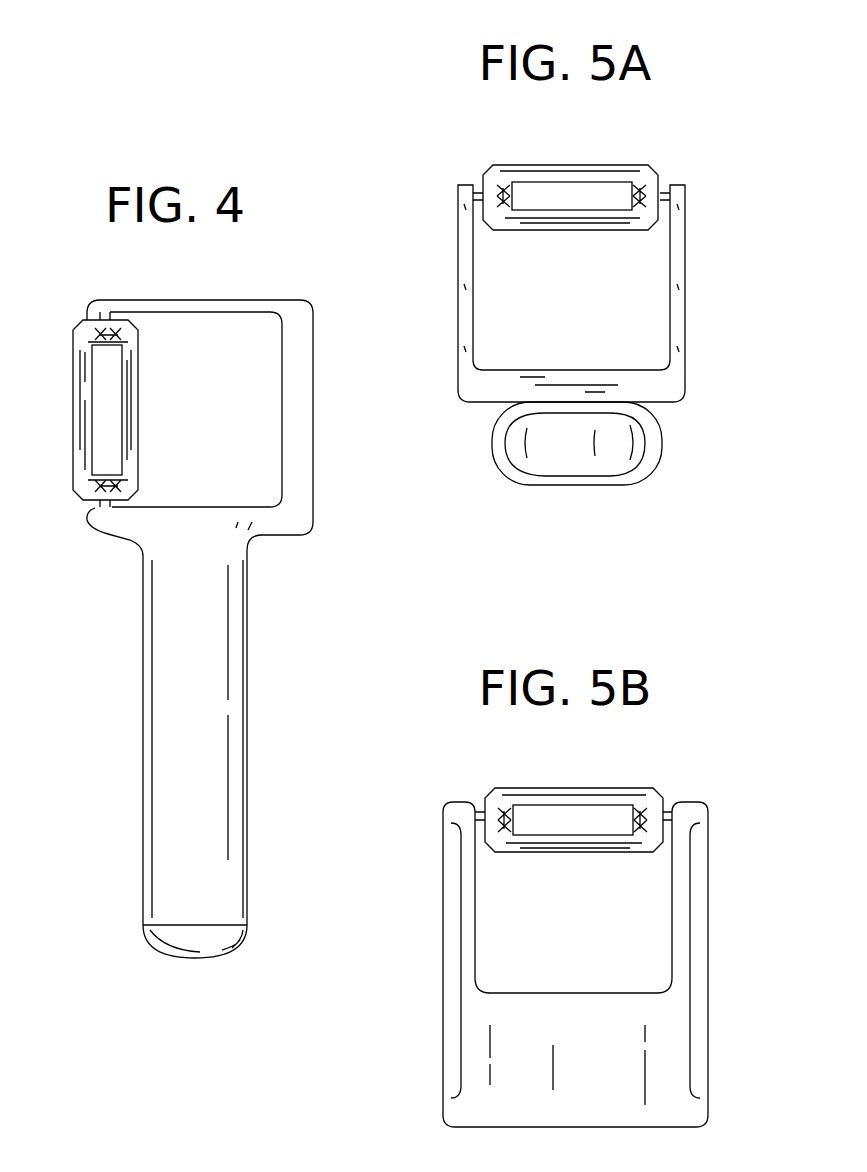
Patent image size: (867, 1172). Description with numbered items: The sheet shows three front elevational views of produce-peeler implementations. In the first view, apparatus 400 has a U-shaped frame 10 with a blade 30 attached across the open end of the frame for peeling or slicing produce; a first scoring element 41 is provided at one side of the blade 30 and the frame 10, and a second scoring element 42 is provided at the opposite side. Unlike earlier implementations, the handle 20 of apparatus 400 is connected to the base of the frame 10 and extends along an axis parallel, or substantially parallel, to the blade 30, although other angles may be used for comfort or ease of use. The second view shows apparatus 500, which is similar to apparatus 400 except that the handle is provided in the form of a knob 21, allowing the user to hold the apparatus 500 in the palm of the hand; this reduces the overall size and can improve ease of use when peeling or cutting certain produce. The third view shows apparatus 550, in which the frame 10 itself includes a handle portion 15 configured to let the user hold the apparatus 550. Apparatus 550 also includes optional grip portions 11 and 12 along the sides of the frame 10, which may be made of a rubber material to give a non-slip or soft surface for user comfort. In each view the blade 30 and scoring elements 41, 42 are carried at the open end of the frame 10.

In FIG. 4, the U-shaped frame 10 is at (300, 312).
In FIG. 5A, the U-shaped frame 10 is at (686, 290).
In FIG. 5B, the U-shaped frame 10 is at (672, 1063).
In FIG. 5B, the grip portion 11 is at (448, 910).
In FIG. 5B, the grip portion 12 is at (700, 916).
In FIG. 5B, the handle portion 15 is at (422, 971).
In FIG. 4, the handle 20 is at (237, 790).
In FIG. 5A, the knob 21 is at (668, 436).
In FIG. 4, the blade 30 is at (80, 395).
In FIG. 5A, the blade 30 is at (588, 170).
In FIG. 5B, the blade 30 is at (603, 792).
In FIG. 4, the first scoring element 41 is at (87, 480).
In FIG. 5A, the first scoring element 41 is at (498, 186).
In FIG. 5B, the first scoring element 41 is at (497, 802).
In FIG. 4, the second scoring element 42 is at (92, 346).
In FIG. 5A, the second scoring element 42 is at (645, 178).
In FIG. 5B, the second scoring element 42 is at (655, 802).
In FIG. 4, the apparatus 400 is at (352, 318).
In FIG. 5A, the apparatus 500 is at (758, 150).
In FIG. 5B, the apparatus 550 is at (756, 791).